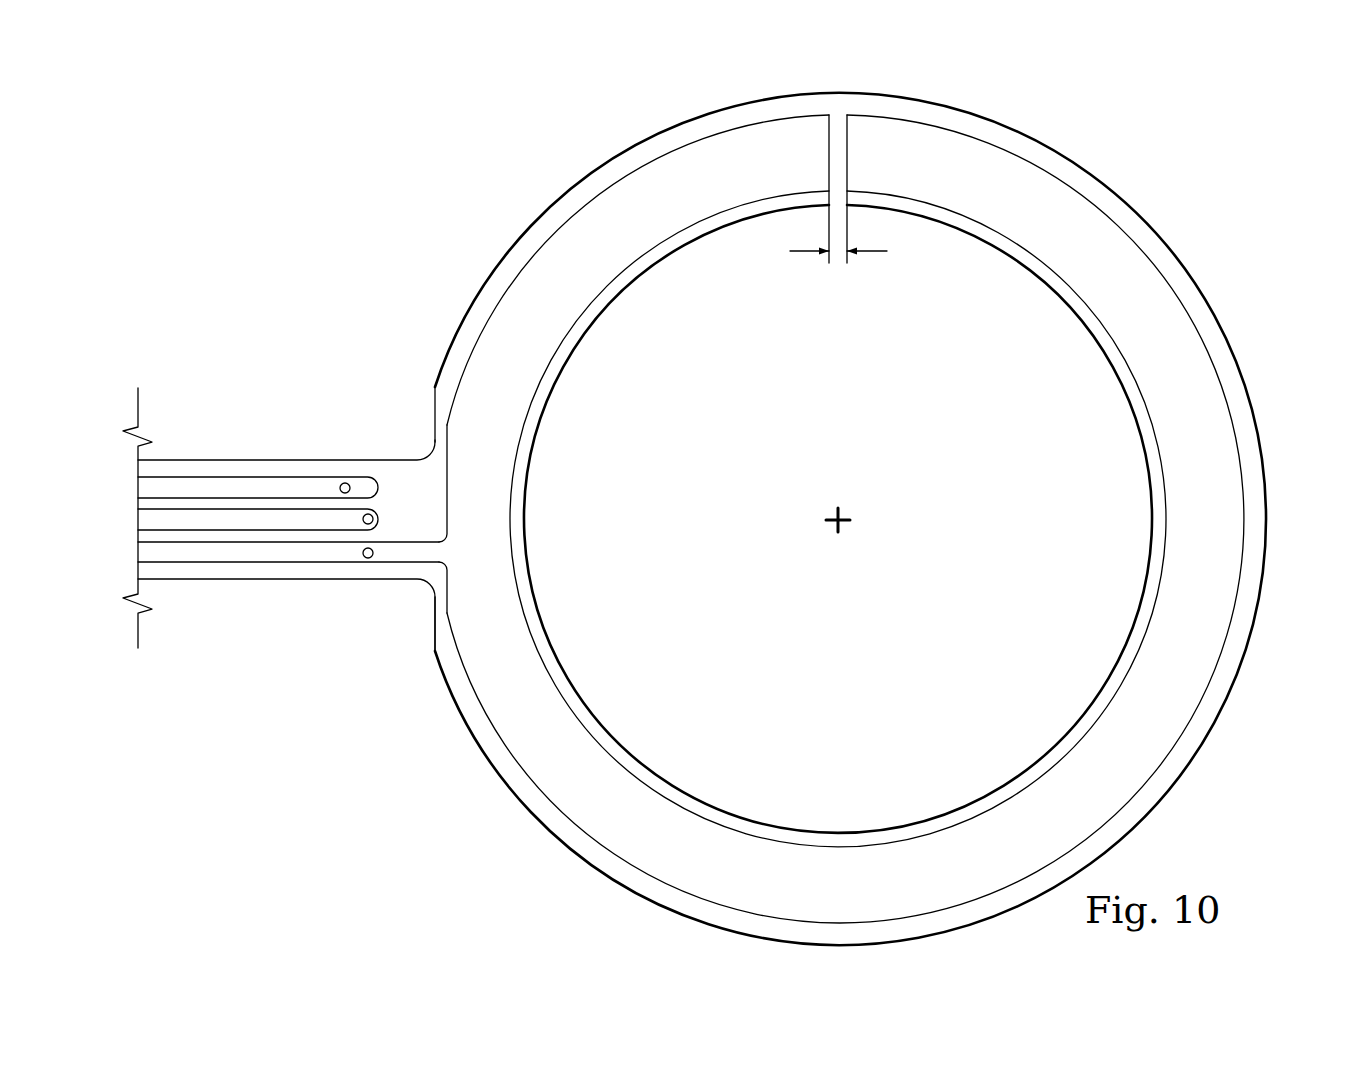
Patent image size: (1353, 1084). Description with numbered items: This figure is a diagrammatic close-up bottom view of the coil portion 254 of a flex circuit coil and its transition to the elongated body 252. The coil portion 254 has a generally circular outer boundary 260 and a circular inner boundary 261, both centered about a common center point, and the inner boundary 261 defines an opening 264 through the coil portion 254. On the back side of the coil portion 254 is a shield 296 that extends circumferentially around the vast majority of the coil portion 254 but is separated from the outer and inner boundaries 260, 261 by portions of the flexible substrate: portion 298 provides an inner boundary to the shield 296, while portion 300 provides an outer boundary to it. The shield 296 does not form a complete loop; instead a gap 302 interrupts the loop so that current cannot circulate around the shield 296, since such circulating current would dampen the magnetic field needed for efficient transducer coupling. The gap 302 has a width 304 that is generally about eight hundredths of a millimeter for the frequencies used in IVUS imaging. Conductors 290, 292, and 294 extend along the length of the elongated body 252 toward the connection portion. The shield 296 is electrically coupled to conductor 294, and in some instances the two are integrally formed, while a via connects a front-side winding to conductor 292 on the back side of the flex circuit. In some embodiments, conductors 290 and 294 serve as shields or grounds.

The elongated body 252 is at (241, 456).
The coil portion 254 is at (1108, 186).
The outer boundary 260 is at (631, 895).
The inner boundary 261 is at (1135, 422).
The opening 264 is at (983, 685).
The conductor 290 is at (308, 476).
The conductor 292 is at (228, 531).
The conductor 294 is at (325, 564).
The shield 296 is at (528, 789).
The portion 298 is at (859, 853).
The portion 300 is at (1203, 746).
The gap 302 is at (838, 114).
The width 304 is at (803, 253).